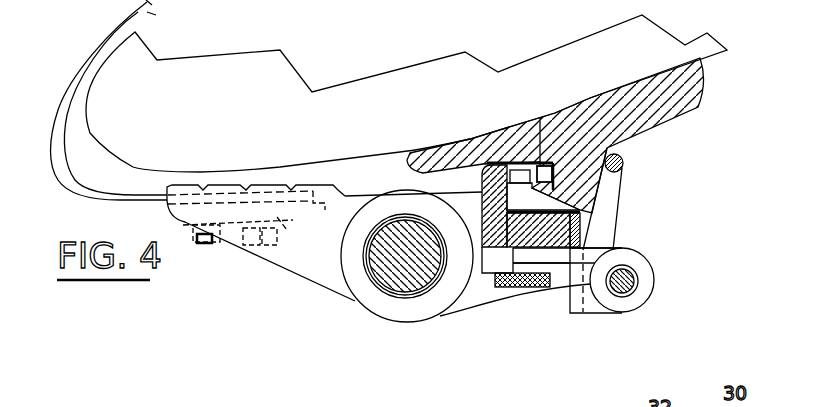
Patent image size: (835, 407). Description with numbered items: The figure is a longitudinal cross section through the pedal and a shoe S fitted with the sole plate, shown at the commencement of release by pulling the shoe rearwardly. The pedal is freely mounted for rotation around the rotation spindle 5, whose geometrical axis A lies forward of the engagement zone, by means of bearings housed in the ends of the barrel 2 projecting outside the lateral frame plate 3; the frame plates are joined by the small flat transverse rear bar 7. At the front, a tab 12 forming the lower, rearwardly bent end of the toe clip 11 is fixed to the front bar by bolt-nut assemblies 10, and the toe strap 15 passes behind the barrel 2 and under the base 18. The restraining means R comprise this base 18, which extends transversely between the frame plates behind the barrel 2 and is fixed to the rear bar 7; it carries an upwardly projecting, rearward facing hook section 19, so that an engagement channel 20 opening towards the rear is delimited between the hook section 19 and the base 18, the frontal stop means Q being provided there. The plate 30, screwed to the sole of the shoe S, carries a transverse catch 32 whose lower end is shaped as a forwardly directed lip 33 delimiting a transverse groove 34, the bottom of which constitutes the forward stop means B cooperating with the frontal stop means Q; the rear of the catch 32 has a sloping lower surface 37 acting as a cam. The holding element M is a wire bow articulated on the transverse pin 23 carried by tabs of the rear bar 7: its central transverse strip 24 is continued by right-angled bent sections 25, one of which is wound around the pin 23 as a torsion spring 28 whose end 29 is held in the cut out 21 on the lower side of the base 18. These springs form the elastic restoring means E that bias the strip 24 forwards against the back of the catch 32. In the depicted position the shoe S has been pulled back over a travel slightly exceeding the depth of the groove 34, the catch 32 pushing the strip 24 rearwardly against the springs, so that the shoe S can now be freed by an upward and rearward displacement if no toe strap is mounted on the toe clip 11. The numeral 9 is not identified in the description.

The barrel 2 is at (360, 287).
The lateral pedal frame plate 3 is at (308, 257).
The rotation spindle 5 is at (402, 273).
The rear bar 7 is at (603, 253).
The guide element 9 is at (287, 233).
The bolt-nut assembly 10 is at (250, 247).
The toe clip 11 is at (57, 148).
The tab 12 is at (312, 165).
The toe strap 15 is at (498, 290).
The base 18 is at (557, 280).
The hook section 19 is at (518, 187).
The engagement channel 20 is at (515, 175).
The cut out 21 is at (493, 263).
The transverse pin 23 is at (622, 287).
The transverse strip 24 is at (622, 158).
The bent section 25 is at (615, 188).
The torsion spring 28 is at (620, 307).
The spring end 29 is at (526, 258).
The plate 30 is at (687, 92).
The catch 32 is at (575, 167).
The lip 33 is at (543, 187).
The transverse groove 34 is at (555, 167).
The sloping lower surface 37 is at (583, 213).
The shoe S is at (185, 83).
The geometrical axis A is at (416, 270).
The forward stop means B is at (570, 183).
The frontal stop means Q is at (528, 170).
The restraining means R is at (474, 183).
The holding element M is at (628, 143).
The elastic restoring means E is at (665, 268).